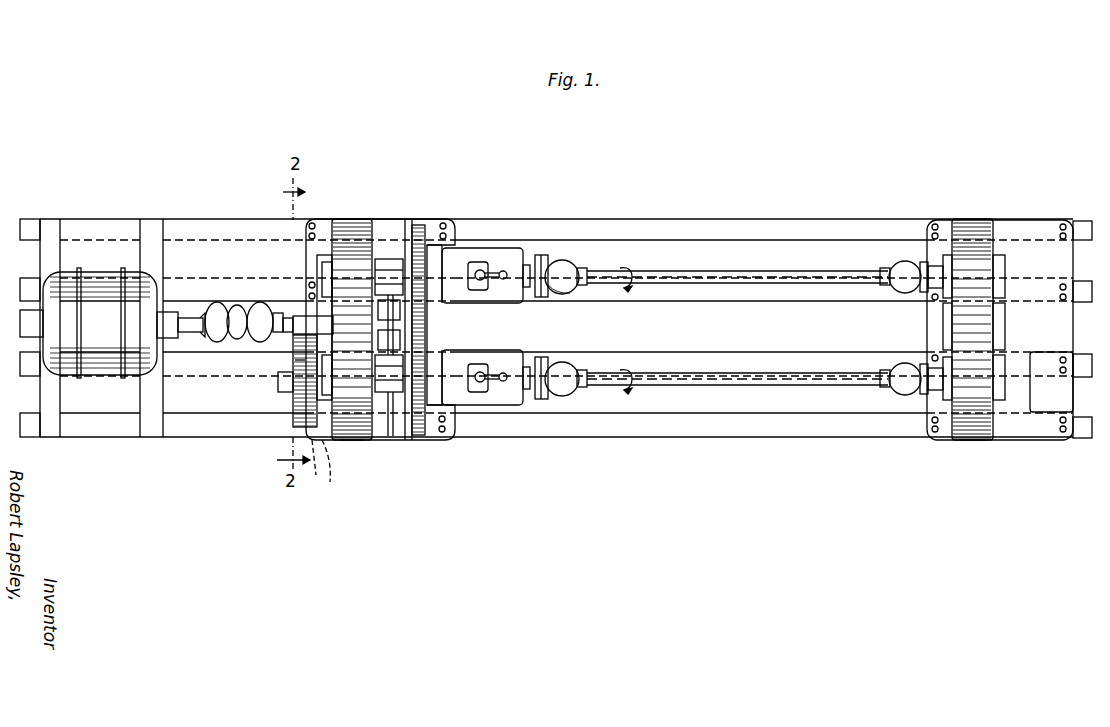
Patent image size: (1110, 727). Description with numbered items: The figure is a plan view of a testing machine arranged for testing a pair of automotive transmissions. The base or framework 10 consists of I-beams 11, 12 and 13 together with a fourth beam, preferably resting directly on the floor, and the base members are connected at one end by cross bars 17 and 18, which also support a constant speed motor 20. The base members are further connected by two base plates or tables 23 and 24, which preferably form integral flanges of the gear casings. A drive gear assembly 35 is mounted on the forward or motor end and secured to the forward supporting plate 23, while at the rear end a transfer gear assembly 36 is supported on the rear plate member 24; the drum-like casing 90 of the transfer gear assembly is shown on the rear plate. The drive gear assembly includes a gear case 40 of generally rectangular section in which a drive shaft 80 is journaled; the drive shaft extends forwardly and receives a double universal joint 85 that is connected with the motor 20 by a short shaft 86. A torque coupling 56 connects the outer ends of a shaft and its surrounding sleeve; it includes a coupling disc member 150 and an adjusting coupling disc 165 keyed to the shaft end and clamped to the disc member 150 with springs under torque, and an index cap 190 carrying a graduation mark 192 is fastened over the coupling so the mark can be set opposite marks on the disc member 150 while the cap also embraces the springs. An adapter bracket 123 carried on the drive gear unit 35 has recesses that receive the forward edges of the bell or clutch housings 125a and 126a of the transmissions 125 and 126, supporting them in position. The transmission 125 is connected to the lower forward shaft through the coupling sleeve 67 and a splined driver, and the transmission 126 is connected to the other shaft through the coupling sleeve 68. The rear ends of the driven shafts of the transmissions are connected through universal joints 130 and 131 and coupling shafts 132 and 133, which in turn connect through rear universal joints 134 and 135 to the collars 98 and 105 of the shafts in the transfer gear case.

The base or framework 10 is at (170, 440).
The I-beam 11 is at (203, 438).
The I-beam 12 is at (180, 222).
The I-beam 13 is at (177, 283).
The cross bar 17 is at (42, 393).
The cross bar 18 is at (158, 395).
The constant speed motor 20 is at (97, 275).
The forward supporting plate 23 is at (322, 220).
The rear plate member 24 is at (937, 220).
The drive gear assembly 35 is at (358, 440).
The transfer gear assembly 36 is at (971, 440).
The gear case 40 is at (355, 230).
The torque coupling 56 is at (288, 400).
The coupling sleeve 67 is at (392, 400).
The coupling sleeve 68 is at (388, 262).
The drive shaft 80 is at (303, 317).
The double universal joint 85 is at (238, 304).
The short shaft 86 is at (200, 316).
The drum 90 is at (988, 220).
The collar 98 is at (937, 386).
The collar 105 is at (940, 270).
The adapter bracket 123 is at (406, 245).
The transmission 125 is at (478, 351).
The bell or clutch housing 125a is at (438, 398).
The transmission 126 is at (505, 255).
The bell or clutch housing 126a is at (457, 237).
The universal joint 130 is at (558, 362).
The universal joint 131 is at (575, 290).
The coupling shaft 132 is at (793, 374).
The coupling shaft 133 is at (777, 275).
The rear universal joint 134 is at (892, 396).
The rear universal joint 135 is at (900, 264).
The coupling disc member 150 is at (300, 410).
The adjusting coupling disc 165 is at (290, 396).
The index cap 190 is at (319, 472).
The graduation mark 192 is at (348, 470).